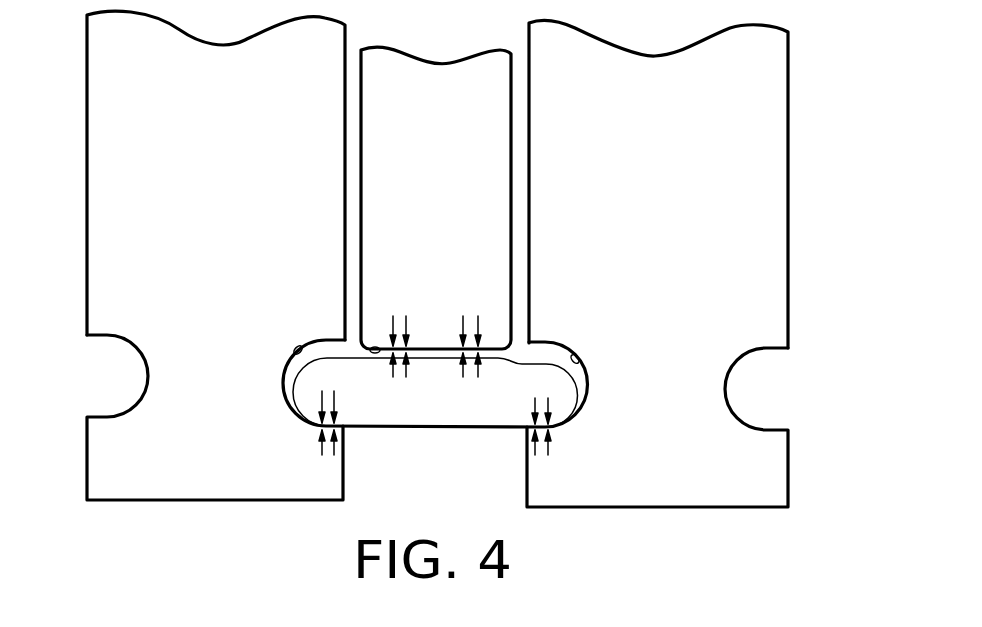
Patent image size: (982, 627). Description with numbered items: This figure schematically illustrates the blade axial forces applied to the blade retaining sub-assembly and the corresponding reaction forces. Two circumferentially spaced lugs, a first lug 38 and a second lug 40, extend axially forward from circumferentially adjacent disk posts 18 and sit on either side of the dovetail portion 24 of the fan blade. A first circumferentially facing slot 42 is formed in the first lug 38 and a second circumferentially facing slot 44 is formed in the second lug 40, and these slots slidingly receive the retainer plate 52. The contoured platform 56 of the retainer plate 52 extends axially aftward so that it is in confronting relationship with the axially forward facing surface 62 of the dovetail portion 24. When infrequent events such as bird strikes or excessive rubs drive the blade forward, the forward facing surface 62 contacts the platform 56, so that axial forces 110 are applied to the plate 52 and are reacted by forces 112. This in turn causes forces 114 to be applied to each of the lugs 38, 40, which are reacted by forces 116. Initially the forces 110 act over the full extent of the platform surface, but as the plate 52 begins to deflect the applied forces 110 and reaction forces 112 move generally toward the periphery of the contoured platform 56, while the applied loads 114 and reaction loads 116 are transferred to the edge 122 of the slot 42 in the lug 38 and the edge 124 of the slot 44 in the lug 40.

The posts 18 is at (192, 184).
The dovetail portion 24 is at (451, 184).
The first lug 38 is at (178, 478).
The second lug 40 is at (717, 490).
The first circumferentially facing slot 42 is at (294, 348).
The second circumferentially facing slot 44 is at (581, 359).
The retainer plate 52 is at (455, 417).
The contoured platform 56 is at (516, 357).
The axially forward facing surface 62 is at (381, 346).
The axial forces 110 is at (407, 318).
The reaction forces 112 is at (405, 378).
The applied forces on lugs 114 is at (336, 391).
The reaction forces of lugs 116 is at (321, 455).
The edge of first slot 122 is at (345, 427).
The edge of second slot 124 is at (525, 428).